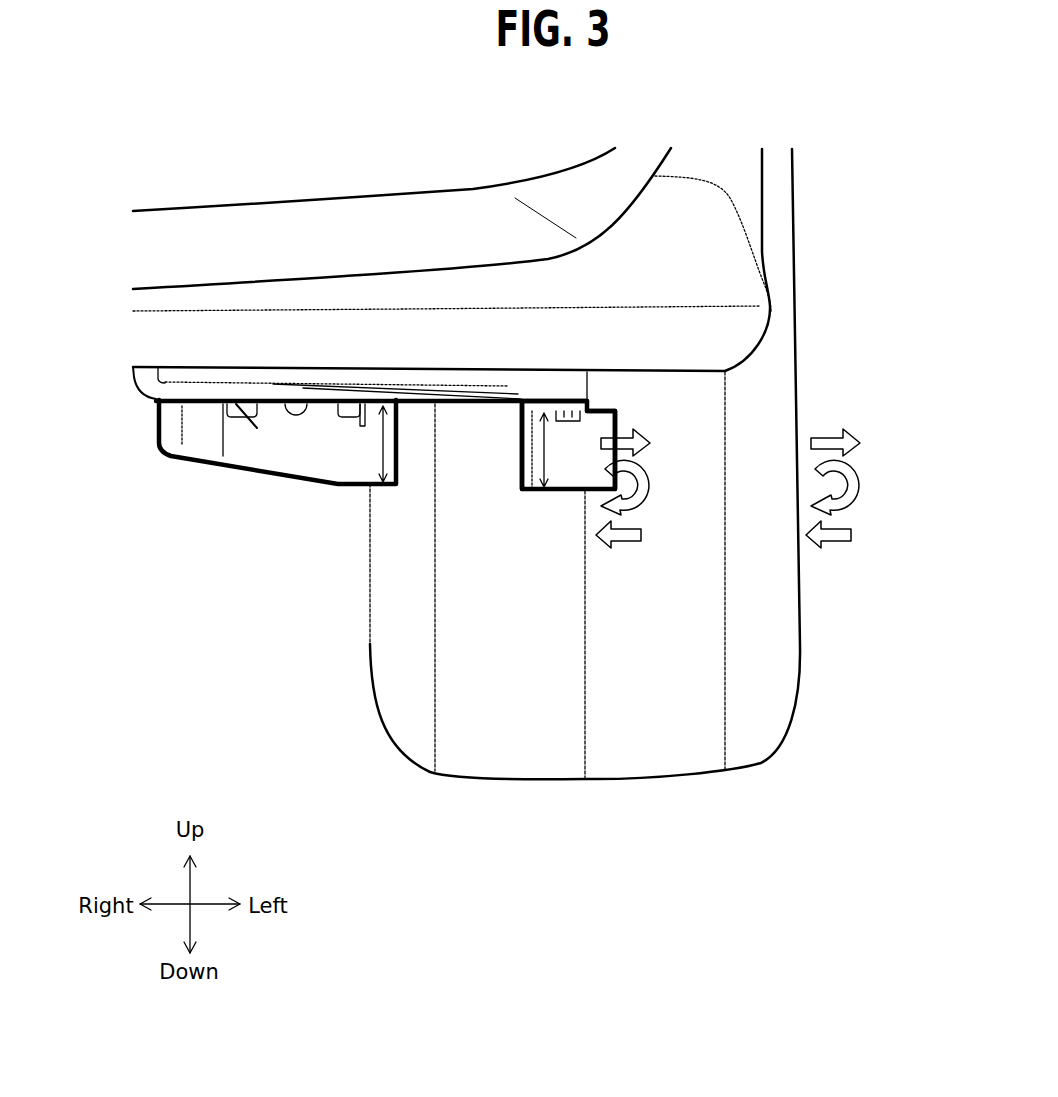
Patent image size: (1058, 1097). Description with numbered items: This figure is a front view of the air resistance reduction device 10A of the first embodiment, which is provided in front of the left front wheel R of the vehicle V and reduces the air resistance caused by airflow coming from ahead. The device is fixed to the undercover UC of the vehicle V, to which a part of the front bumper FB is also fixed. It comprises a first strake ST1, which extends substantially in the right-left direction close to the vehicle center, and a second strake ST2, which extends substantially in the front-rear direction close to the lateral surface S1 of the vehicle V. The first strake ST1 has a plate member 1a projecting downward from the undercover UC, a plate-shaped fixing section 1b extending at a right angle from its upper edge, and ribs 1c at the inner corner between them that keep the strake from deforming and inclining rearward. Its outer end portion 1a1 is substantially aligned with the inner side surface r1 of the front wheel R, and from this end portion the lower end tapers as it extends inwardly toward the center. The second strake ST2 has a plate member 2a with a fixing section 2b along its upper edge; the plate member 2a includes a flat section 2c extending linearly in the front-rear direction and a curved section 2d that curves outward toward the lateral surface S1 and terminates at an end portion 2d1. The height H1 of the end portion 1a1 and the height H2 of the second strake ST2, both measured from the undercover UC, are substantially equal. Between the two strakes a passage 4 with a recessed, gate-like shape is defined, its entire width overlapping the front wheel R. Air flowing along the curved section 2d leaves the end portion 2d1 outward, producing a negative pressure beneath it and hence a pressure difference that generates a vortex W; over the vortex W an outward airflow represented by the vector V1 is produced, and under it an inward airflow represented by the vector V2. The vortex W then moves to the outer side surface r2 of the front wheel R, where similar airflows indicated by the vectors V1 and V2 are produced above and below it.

The front bumper FB is at (200, 243).
The undercover UC is at (138, 381).
The lateral surface S1 is at (759, 170).
The air resistance reduction device 10A is at (632, 380).
The outer side surface r2 is at (794, 317).
The inner side surface r1 is at (367, 613).
The front wheel R is at (789, 643).
The vehicle V is at (692, 102).
The plate member 1a is at (302, 453).
The end portion 1a1 is at (396, 443).
The fixing section 1b is at (298, 398).
The ribs 1c is at (343, 398).
The first strake ST1 is at (233, 470).
The height H1 is at (364, 444).
The passage 4 is at (453, 465).
The plate member 2a is at (518, 438).
The fixing section 2b is at (573, 398).
The flat section 2c is at (520, 455).
The curved section 2d is at (592, 422).
The end portion 2d1 is at (622, 415).
The height H2 is at (561, 450).
The second strake ST2 is at (553, 490).
The vector V1 is at (829, 432).
The vector V2 is at (828, 543).
The vortex W is at (857, 487).